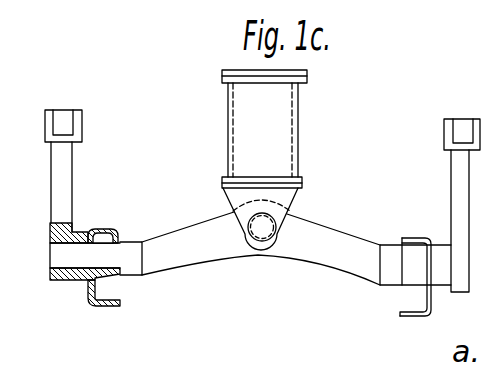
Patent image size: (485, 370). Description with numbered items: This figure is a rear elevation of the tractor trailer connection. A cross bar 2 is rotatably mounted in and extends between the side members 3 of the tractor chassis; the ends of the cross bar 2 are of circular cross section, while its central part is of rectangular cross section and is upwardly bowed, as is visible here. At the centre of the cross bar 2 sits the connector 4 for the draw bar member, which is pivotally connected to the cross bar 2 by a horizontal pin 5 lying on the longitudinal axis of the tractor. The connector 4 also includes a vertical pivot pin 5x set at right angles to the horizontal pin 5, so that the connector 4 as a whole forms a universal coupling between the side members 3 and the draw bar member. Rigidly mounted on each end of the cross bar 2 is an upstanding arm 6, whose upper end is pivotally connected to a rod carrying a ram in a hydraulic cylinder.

The cross bar 2 is at (313, 232).
The side members 3 is at (112, 228).
The connector 4 is at (252, 75).
The horizontal pin 5 is at (256, 224).
The vertical pivot pin 5x is at (229, 134).
The upstanding arm 6 is at (65, 187).